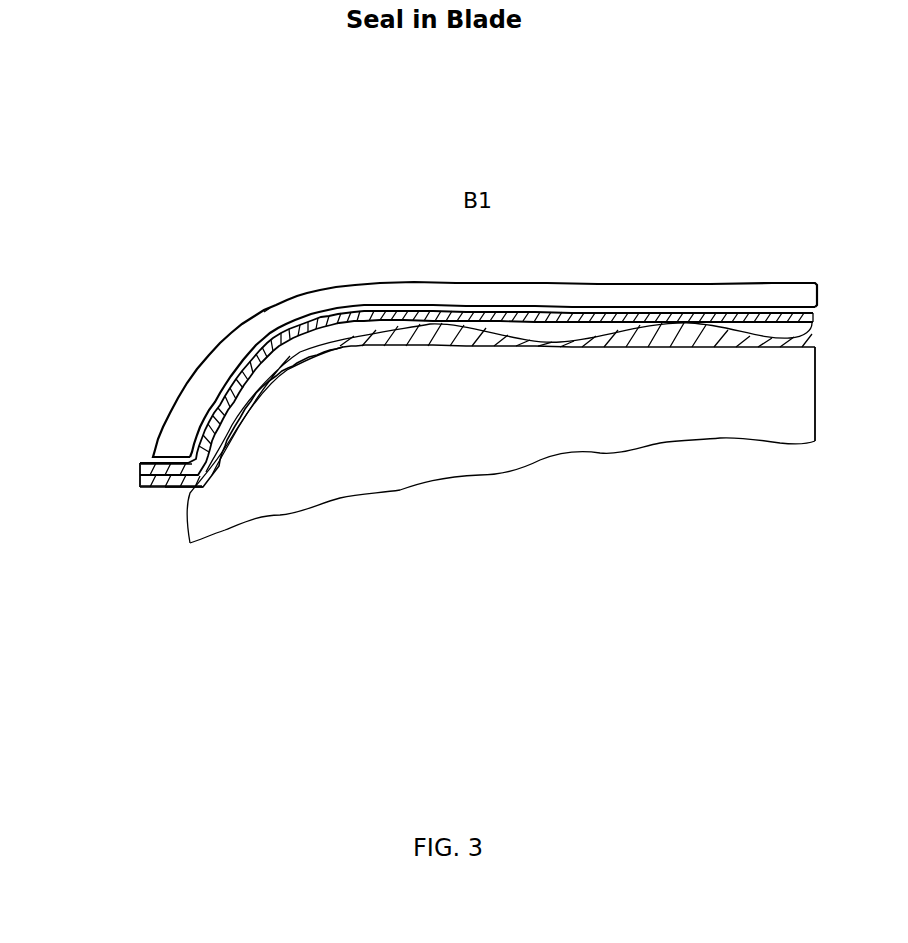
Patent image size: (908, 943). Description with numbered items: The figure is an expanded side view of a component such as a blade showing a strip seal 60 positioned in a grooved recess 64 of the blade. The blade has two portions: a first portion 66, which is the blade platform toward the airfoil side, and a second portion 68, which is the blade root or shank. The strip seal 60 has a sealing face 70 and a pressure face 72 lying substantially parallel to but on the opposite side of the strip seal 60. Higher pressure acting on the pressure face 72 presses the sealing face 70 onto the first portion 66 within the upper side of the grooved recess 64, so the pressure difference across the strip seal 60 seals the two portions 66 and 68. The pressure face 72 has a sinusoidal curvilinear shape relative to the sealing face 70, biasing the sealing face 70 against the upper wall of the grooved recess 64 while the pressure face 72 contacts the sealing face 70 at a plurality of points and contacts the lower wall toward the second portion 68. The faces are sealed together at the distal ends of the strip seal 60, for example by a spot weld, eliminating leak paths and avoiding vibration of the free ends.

The strip seal 60 is at (128, 478).
The grooved recess 64 is at (178, 509).
The first portion 66 is at (217, 366).
The second portion 68 is at (591, 432).
The sealing face 70 is at (778, 307).
The pressure face 72 is at (802, 343).